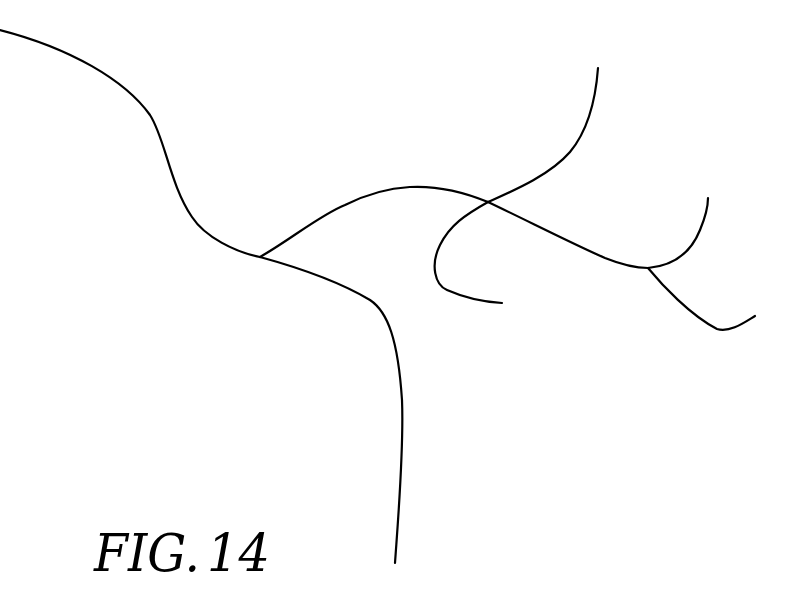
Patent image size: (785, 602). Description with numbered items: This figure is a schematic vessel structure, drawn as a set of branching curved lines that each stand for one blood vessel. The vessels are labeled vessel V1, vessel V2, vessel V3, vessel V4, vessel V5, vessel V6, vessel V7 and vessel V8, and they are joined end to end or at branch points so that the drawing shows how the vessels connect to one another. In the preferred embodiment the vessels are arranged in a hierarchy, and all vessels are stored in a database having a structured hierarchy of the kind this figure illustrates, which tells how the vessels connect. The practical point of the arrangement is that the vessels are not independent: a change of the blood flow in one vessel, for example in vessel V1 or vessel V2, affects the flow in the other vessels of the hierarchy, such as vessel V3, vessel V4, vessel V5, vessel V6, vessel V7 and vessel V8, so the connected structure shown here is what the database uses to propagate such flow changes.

The first vessel segment V1 is at (150, 115).
The second vessel segment V2 is at (341, 206).
The third vessel segment V3 is at (553, 159).
The fourth vessel segment V4 is at (453, 232).
The fifth vessel segment V5 is at (547, 223).
The sixth vessel segment V6 is at (718, 329).
The seventh vessel segment V7 is at (690, 250).
The eighth vessel segment V8 is at (400, 427).